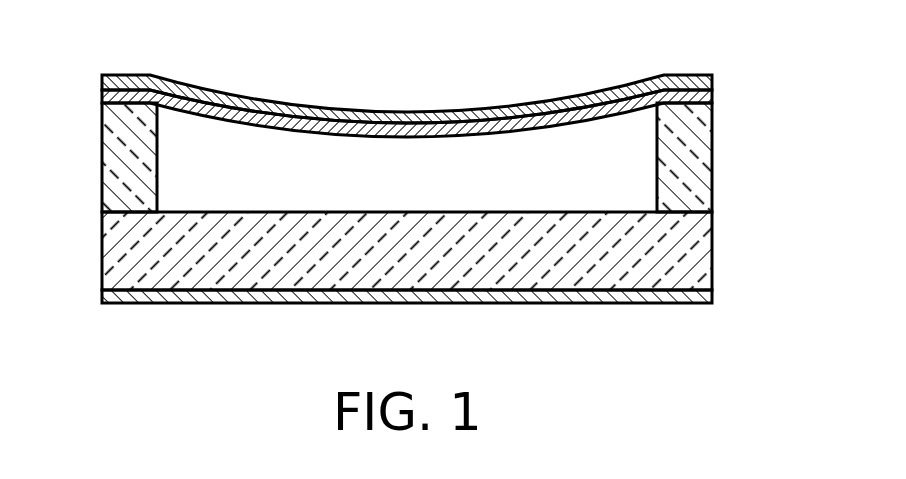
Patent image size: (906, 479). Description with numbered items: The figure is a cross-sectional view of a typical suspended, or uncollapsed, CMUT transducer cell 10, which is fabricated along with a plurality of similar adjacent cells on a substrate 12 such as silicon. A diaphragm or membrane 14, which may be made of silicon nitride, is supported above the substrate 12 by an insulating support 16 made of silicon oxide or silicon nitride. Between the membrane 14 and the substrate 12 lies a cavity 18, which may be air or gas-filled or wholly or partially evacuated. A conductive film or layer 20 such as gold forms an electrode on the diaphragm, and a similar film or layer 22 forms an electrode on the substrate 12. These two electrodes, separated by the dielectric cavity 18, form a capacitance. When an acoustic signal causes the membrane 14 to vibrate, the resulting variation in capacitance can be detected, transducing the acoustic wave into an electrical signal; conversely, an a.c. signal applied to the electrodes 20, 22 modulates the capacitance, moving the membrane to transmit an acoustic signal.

The CMUT transducer cell 10 is at (409, 170).
The substrate 12 is at (703, 254).
The membrane 14 is at (712, 103).
The insulating support 16 is at (110, 174).
The cavity 18 is at (542, 147).
The conductive film or layer 20 is at (712, 82).
The conductive film or layer 22 is at (712, 298).